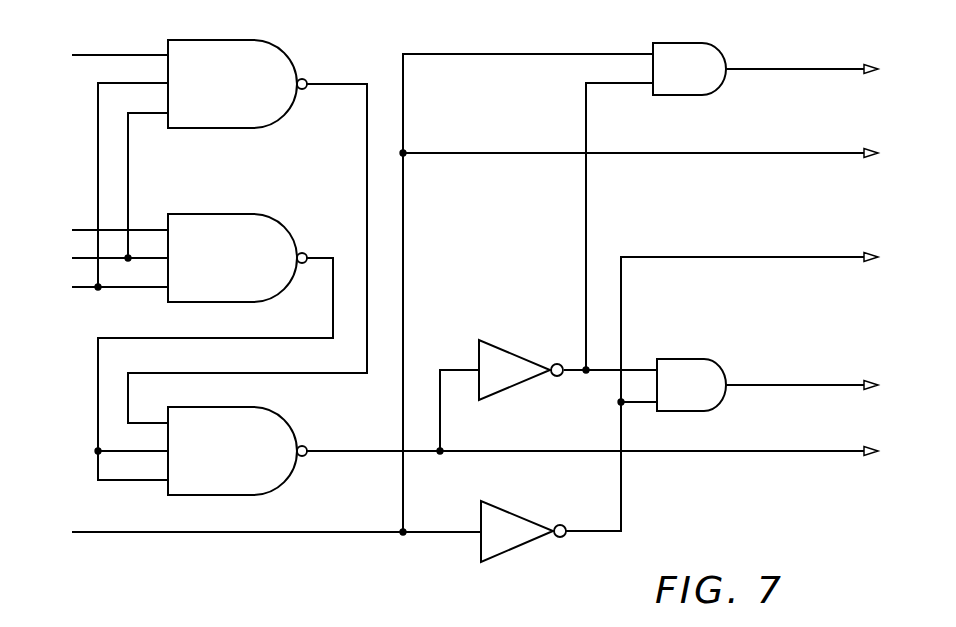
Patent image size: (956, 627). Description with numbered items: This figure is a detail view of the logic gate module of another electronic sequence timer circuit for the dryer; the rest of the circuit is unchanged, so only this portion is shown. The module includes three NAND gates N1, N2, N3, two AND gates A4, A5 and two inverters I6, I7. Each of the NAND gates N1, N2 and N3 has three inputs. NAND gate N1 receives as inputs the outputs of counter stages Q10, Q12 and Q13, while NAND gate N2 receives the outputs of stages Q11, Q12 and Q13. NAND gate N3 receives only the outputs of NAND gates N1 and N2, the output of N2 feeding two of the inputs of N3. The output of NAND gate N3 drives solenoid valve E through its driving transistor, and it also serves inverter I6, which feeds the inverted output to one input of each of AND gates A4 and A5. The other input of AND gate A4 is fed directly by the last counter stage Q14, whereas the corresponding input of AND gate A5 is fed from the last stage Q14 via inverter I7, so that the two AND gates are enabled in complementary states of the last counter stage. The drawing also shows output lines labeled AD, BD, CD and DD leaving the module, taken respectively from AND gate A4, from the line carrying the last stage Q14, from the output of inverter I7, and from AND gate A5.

The NAND gate N1 is at (237, 84).
The NAND gate N2 is at (237, 258).
The NAND gate N3 is at (237, 451).
The AND gate A4 is at (689, 69).
The AND gate A5 is at (691, 385).
The inverter I6 is at (521, 370).
The inverter I7 is at (523, 531).
The counter stage Q10 is at (48, 58).
The counter stage Q11 is at (48, 233).
The counter stage Q12 is at (48, 261).
The counter stage Q13 is at (48, 290).
The last counter stage Q14 is at (48, 534).
The output signal AD is at (904, 69).
The output signal BD is at (904, 153).
The output signal CD is at (904, 257).
The output signal DD is at (905, 385).
The solenoid valve E is at (895, 451).